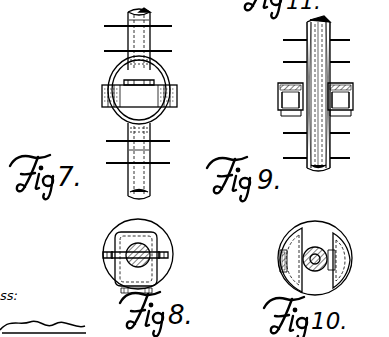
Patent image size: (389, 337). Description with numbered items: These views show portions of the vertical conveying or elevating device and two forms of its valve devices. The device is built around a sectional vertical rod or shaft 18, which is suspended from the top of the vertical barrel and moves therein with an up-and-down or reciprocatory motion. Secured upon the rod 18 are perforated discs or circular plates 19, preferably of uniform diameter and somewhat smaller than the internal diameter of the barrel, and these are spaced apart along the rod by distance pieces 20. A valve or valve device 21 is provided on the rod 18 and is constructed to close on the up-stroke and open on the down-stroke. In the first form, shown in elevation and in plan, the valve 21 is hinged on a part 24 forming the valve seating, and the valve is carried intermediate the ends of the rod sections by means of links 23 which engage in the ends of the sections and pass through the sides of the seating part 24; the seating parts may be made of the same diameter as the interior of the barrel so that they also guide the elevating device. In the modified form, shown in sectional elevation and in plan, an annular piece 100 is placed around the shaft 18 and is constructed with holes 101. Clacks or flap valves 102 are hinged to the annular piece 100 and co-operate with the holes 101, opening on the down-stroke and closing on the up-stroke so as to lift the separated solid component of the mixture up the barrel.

In FIG. 7, the vertical rod or shaft 18 is at (136, 9).
In FIG. 8, the vertical rod or shaft 18 is at (126, 250).
In FIG. 9, the vertical rod or shaft 18 is at (330, 48).
In FIG. 10, the vertical rod or shaft 18 is at (322, 248).
In FIG. 7, the perforated discs or circular plates 19 is at (104, 51).
In FIG. 9, the perforated discs or circular plates 19 is at (283, 62).
In FIG. 7, the distance pieces 20 is at (150, 28).
In FIG. 8, the distance pieces 20 is at (156, 242).
In FIG. 9, the distance pieces 20 is at (330, 30).
In FIG. 10, the distance pieces 20 is at (312, 248).
In FIG. 7, the valve or valve device 21 is at (140, 80).
In FIG. 8, the valve or valve device 21 is at (142, 246).
In FIG. 7, the links 23 is at (108, 113).
In FIG. 8, the links 23 is at (115, 256).
In FIG. 7, the part forming the valve seating 24 is at (177, 93).
In FIG. 8, the part forming the valve seating 24 is at (173, 254).
In FIG. 9, the annular piece 100 is at (290, 116).
In FIG. 10, the annular piece 100 is at (296, 233).
In FIG. 9, the holes 101 is at (282, 98).
In FIG. 10, the holes 101 is at (298, 250).
In FIG. 9, the clacks or flap valves 102 is at (290, 83).
In FIG. 10, the clacks or flap valves 102 is at (339, 242).